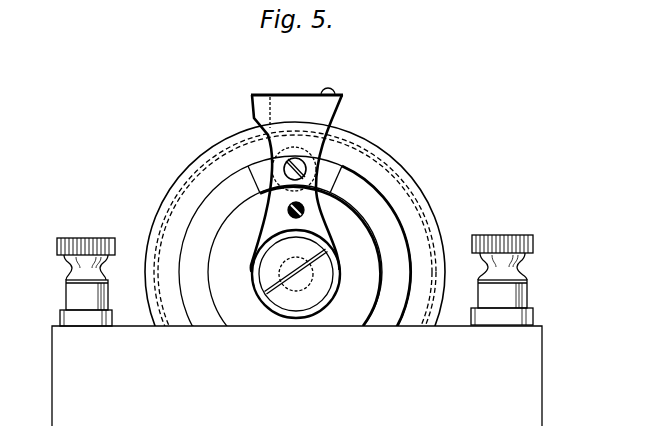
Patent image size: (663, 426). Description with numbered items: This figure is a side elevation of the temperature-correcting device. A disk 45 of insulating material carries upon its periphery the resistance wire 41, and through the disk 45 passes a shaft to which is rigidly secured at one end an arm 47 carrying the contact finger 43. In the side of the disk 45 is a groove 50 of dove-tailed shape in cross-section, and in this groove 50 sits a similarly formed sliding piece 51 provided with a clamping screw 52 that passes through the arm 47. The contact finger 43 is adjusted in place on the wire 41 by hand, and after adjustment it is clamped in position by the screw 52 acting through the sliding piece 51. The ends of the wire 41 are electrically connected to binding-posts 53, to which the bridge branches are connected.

The wire 41 is at (389, 160).
The contact finger 43 is at (297, 102).
The disk 45 is at (312, 274).
The arm 47 is at (266, 226).
The groove 50 is at (295, 272).
The sliding piece 51 is at (343, 186).
The clamping screw 52 is at (294, 177).
The binding-posts 53 is at (86, 238).